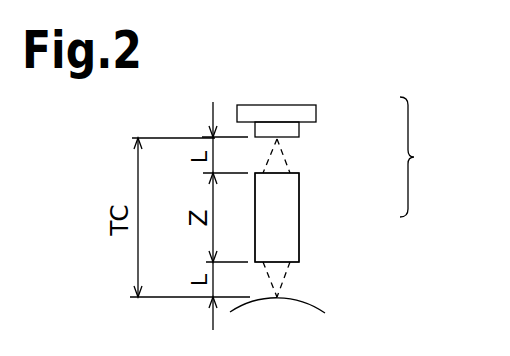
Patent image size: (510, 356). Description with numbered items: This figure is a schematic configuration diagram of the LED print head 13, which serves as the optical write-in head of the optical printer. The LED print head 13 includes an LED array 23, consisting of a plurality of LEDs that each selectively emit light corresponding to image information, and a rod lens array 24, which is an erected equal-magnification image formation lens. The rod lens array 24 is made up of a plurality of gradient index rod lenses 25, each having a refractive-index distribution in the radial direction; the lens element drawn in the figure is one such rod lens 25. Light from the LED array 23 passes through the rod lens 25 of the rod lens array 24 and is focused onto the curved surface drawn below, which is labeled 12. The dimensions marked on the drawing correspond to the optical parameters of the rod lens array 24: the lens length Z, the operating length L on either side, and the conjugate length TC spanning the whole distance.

The optical disc 12 is at (305, 304).
The LED print head 13 is at (414, 157).
The LED array 23 is at (317, 112).
The rod lens array 24 is at (301, 200).
The gradient index rod lens 25 is at (300, 236).